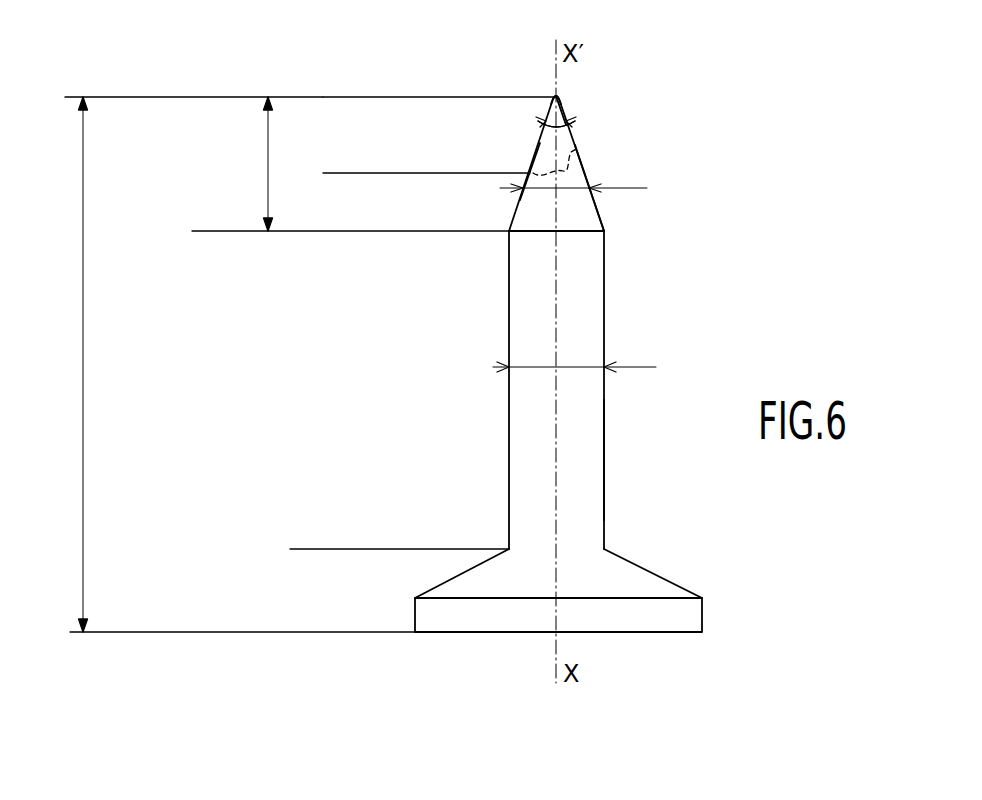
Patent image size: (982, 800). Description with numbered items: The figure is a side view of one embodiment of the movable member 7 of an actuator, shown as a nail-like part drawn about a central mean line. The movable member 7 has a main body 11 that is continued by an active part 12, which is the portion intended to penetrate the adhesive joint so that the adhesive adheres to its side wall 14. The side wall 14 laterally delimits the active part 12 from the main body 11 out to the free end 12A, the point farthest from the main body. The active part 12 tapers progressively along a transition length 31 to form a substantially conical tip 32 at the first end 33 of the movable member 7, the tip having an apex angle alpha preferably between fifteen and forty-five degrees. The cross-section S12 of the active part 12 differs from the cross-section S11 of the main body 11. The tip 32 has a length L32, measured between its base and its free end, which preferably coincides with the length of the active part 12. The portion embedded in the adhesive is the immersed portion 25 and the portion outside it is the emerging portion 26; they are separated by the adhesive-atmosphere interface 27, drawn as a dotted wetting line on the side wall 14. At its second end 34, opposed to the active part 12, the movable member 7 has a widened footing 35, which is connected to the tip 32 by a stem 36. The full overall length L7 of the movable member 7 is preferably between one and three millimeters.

The movable member 7 is at (462, 337).
The main body 11 is at (200, 632).
The active part 12 is at (200, 231).
The free end 12A is at (548, 84).
The side wall 14 is at (597, 213).
The immersed portion 25 is at (331, 98).
The emerging portion 26 is at (331, 173).
The adhesive-atmosphere interface 27 is at (580, 148).
The transition length 31 is at (520, 142).
The tip 32 is at (575, 84).
The first end 33 is at (646, 93).
The second end 34 is at (704, 572).
The widen footing 35 is at (298, 549).
The stem 36 is at (580, 479).
The overall length of the movable member L7 is at (83, 350).
The length of the tip L32 is at (268, 178).
The cross-section of the main body S11 is at (594, 372).
The cross-section of the active part S12 is at (593, 189).
The apex angle alpha is at (573, 124).